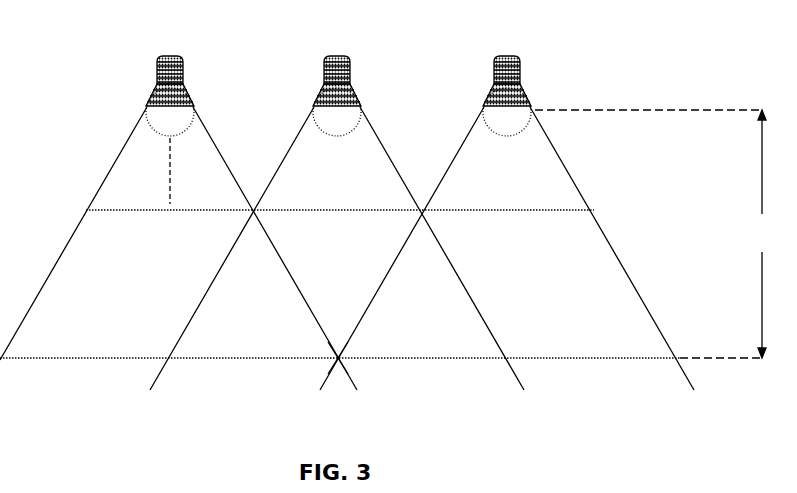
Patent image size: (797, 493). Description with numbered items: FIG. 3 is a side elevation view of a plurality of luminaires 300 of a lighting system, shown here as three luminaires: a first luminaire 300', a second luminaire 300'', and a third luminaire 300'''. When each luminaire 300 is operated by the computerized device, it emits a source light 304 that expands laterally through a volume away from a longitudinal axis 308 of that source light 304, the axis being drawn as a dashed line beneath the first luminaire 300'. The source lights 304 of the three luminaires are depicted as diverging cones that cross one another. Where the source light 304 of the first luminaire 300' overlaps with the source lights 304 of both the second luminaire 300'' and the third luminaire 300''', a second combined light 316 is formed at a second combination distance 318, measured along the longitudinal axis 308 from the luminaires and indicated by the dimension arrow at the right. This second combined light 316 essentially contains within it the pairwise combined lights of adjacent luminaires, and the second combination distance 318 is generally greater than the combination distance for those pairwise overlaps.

The luminaire 300 is at (321, 76).
The first luminaire 300' is at (153, 76).
The second luminaire 300'' is at (355, 76).
The third luminaire 300''' is at (470, 76).
The source light 304 is at (109, 173).
The longitudinal axis 308 is at (170, 137).
The second combined light 316 is at (337, 383).
The second combination distance 318 is at (653, 234).